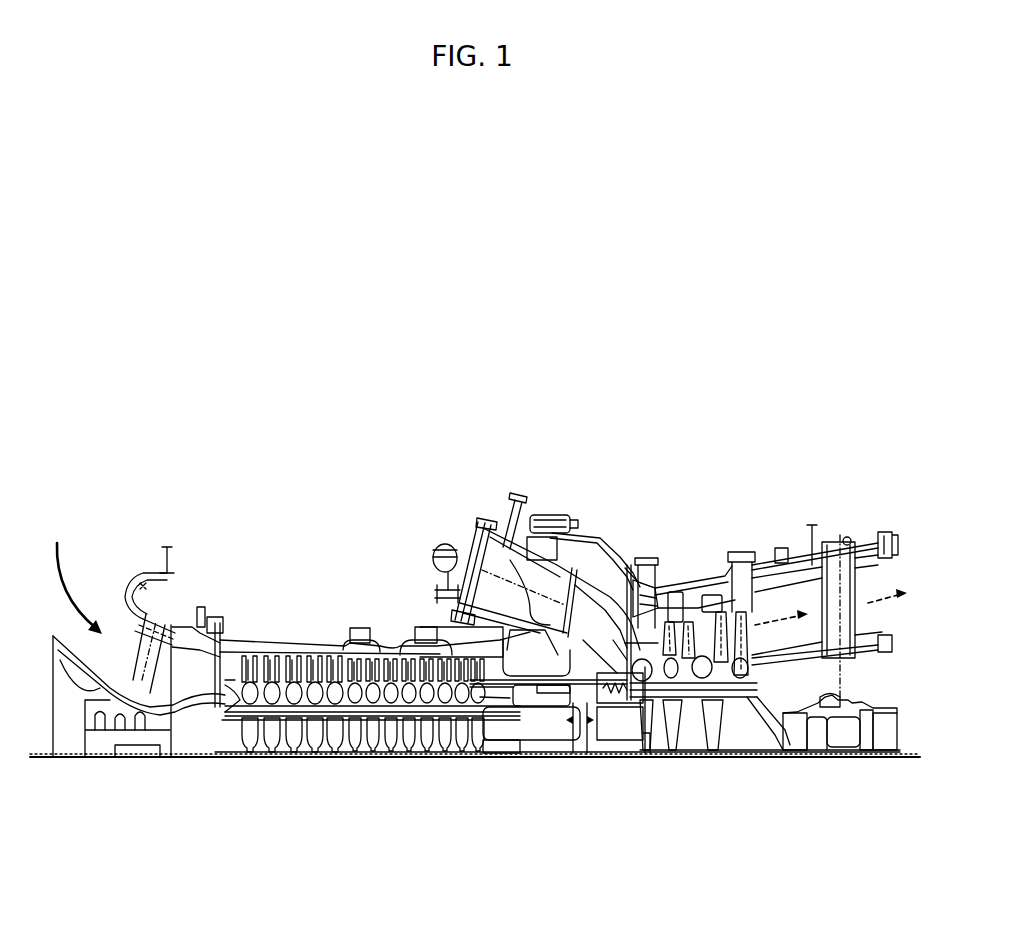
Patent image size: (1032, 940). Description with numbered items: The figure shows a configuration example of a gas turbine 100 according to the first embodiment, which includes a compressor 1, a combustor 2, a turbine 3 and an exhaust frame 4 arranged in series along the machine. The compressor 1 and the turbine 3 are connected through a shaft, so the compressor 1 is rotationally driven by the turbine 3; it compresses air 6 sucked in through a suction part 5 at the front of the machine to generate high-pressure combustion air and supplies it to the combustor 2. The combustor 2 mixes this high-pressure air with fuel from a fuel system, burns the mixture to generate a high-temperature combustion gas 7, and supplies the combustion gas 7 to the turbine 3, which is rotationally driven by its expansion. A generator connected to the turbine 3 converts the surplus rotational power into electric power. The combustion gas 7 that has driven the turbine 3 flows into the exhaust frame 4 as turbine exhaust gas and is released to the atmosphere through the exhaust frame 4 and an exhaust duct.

The gas turbine 100 is at (294, 484).
The compressor 1 is at (286, 767).
The combustor 2 is at (467, 506).
The turbine 3 is at (644, 767).
The exhaust frame 4 is at (789, 528).
The suction part 5 is at (124, 606).
The air 6 is at (62, 547).
The combustion gas 7 is at (695, 577).